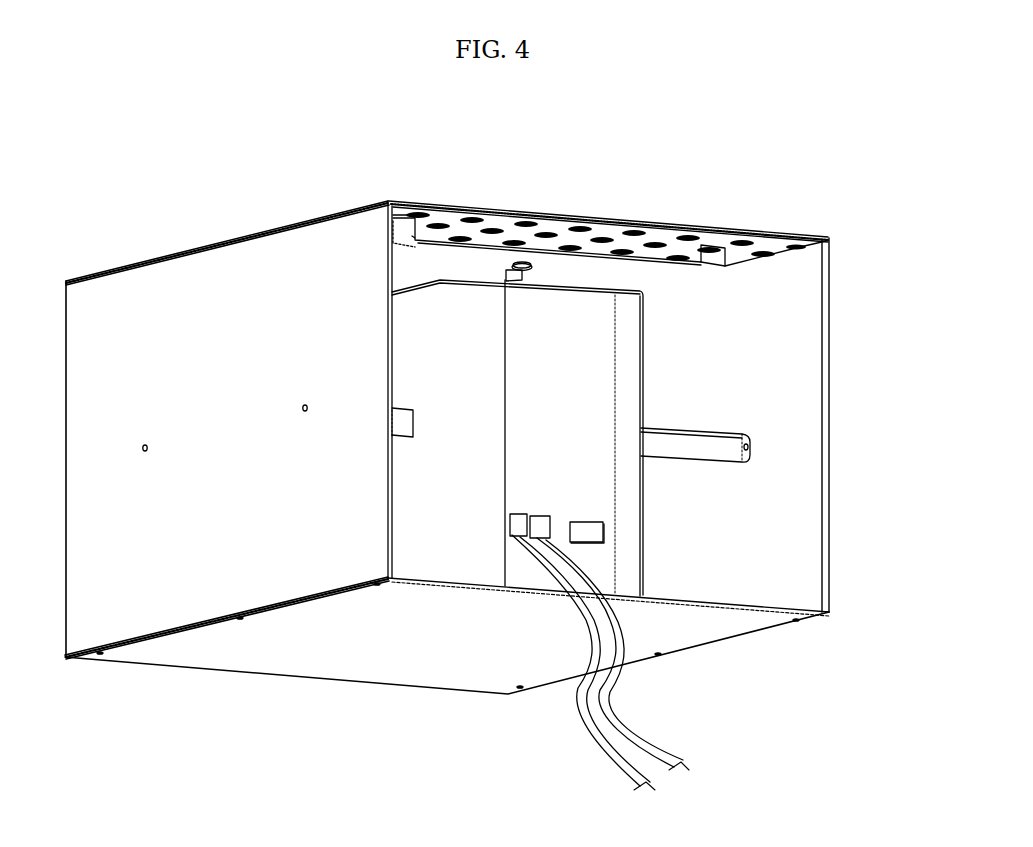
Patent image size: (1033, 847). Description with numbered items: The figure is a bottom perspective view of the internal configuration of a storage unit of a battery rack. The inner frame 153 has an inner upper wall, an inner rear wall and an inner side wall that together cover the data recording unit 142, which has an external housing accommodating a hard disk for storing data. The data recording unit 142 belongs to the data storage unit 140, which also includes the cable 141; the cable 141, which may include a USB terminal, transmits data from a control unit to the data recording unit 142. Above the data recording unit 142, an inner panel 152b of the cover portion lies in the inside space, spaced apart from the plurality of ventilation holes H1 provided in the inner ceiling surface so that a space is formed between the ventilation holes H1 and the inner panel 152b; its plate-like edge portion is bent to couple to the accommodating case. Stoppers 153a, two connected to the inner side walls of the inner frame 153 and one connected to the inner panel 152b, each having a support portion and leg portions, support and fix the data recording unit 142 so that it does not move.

The data storage unit 140 is at (682, 354).
The cable 141 is at (596, 752).
The data recording unit 142 is at (482, 312).
The inner panel 152b is at (636, 268).
The inner frame 153 is at (311, 193).
The stopper 153a is at (520, 263).
The ventilation holes H1 is at (603, 238).